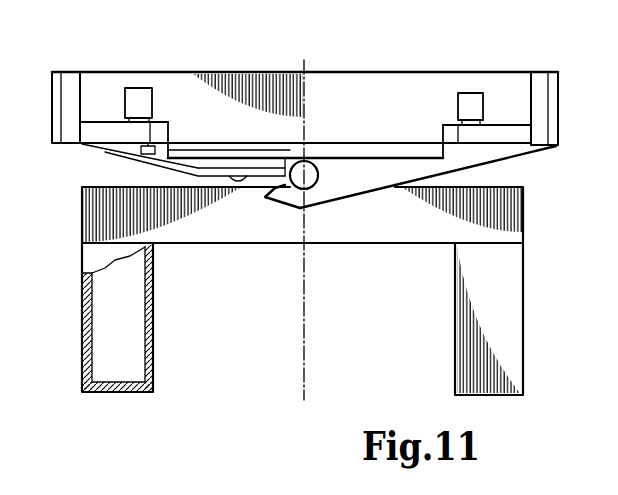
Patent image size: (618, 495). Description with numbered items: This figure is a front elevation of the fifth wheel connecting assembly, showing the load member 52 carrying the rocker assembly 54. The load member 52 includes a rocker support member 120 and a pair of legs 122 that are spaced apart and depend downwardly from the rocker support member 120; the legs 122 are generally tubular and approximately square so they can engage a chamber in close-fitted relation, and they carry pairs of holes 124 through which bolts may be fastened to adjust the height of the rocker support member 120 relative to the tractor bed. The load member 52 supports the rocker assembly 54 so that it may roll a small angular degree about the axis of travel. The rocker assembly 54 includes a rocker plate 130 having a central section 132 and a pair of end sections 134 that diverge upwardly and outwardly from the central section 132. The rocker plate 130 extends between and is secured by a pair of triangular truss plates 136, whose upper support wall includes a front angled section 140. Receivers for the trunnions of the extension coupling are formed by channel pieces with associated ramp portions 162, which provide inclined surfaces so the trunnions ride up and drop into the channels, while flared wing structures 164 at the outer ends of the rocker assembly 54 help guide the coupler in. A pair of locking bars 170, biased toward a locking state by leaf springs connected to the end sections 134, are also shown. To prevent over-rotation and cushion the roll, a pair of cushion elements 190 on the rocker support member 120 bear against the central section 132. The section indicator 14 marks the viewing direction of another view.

The section line / view direction for FIG. 14 is at (320, 60).
The load member 52 is at (530, 271).
The rocker assembly 54 is at (490, 60).
The rocker support member 120 is at (358, 247).
The legs 122 is at (85, 377).
The holes 124 is at (87, 282).
The rocker plate 130 is at (200, 139).
The central section 132 is at (290, 148).
The end sections 134 is at (115, 158).
The triangular truss plates 136 is at (373, 182).
The front angled section 140 is at (391, 138).
The ramp portion 162 is at (104, 130).
The flared wing structures 164 is at (56, 100).
The locking bars 170 is at (150, 107).
The cushion elements 190 is at (238, 185).